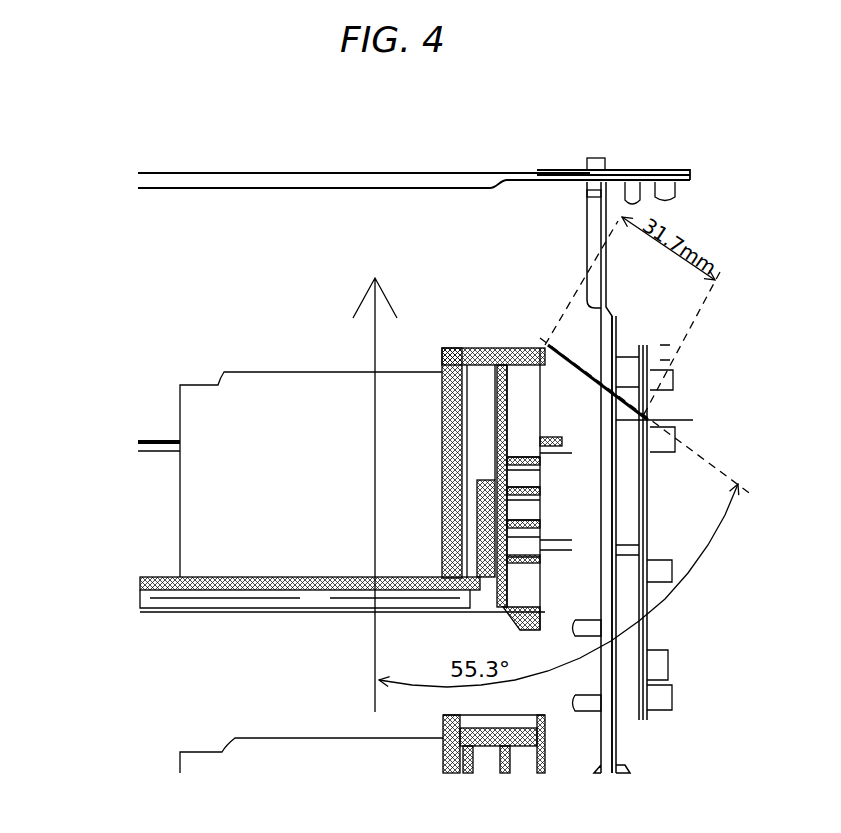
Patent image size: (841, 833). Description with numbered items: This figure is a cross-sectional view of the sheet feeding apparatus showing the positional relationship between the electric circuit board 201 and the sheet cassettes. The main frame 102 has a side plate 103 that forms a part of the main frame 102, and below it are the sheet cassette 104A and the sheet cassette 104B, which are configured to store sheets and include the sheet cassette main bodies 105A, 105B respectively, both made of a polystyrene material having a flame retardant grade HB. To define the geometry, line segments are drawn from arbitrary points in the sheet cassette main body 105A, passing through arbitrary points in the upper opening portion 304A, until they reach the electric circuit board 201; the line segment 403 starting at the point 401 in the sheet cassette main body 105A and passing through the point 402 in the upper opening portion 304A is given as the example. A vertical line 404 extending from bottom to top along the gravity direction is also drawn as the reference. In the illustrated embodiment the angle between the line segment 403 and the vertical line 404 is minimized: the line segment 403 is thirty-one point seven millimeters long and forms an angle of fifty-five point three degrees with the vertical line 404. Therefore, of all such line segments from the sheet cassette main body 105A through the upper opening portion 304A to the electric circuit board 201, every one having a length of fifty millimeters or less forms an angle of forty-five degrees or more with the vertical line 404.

The main frame 102 is at (664, 166).
The side plate 103 is at (620, 742).
The sheet cassette 104A is at (131, 419).
The sheet cassette 104B is at (140, 756).
The sheet cassette main body 105A is at (203, 384).
The sheet cassette main body 105B is at (203, 752).
The electric circuit board 201 is at (650, 644).
The upper opening portion 304A is at (609, 332).
The point 401 is at (543, 347).
The point 402 is at (640, 385).
The line segment 403 is at (578, 373).
The vertical line 404 is at (350, 344).